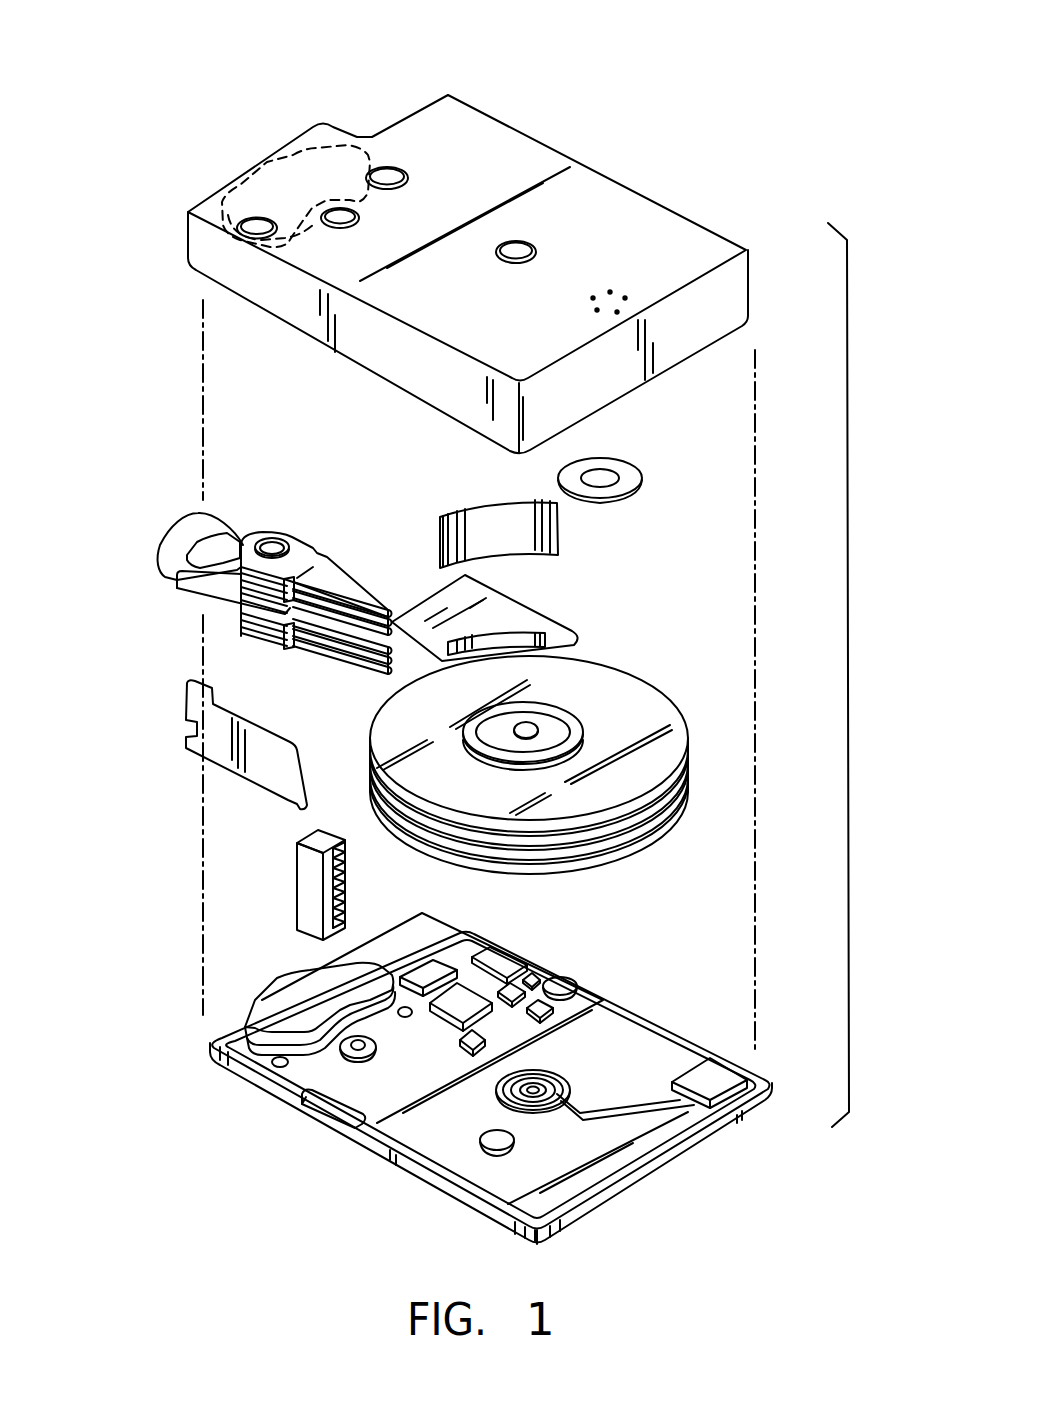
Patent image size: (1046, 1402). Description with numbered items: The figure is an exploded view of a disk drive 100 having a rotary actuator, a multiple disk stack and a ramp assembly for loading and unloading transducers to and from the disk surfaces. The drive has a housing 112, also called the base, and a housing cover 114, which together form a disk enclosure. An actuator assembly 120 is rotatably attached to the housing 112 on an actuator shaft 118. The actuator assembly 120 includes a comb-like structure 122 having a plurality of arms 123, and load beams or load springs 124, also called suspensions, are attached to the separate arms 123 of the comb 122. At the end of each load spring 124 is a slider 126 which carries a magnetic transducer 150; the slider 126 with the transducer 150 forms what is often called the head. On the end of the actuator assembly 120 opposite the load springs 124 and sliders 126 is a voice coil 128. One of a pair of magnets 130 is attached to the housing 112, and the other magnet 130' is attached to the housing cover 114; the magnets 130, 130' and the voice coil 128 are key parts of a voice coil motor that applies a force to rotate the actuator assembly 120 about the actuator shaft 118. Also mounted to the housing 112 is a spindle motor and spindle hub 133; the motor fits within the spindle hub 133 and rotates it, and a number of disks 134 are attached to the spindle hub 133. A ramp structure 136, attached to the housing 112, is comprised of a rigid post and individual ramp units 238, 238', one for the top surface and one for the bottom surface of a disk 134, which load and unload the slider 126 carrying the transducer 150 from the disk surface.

The disk drive 100 is at (617, 98).
The housing 112 is at (653, 1047).
The housing cover 114 is at (633, 212).
The actuator shaft 118 is at (275, 543).
The actuator assembly 120 is at (223, 593).
The comb-like structure 122 is at (297, 647).
The arms 123 is at (327, 563).
The load springs 124 is at (345, 590).
The slider 126 is at (390, 613).
The voice coil 128 is at (178, 547).
The magnet 130 is at (318, 995).
The magnet 130' is at (288, 173).
The spindle hub 133 is at (533, 722).
The disks 134 is at (653, 708).
The ramp structure 136 is at (305, 883).
The magnetic transducer 150 is at (397, 616).
The individual ramp unit 238 is at (331, 790).
The individual ramp unit 238' is at (387, 888).